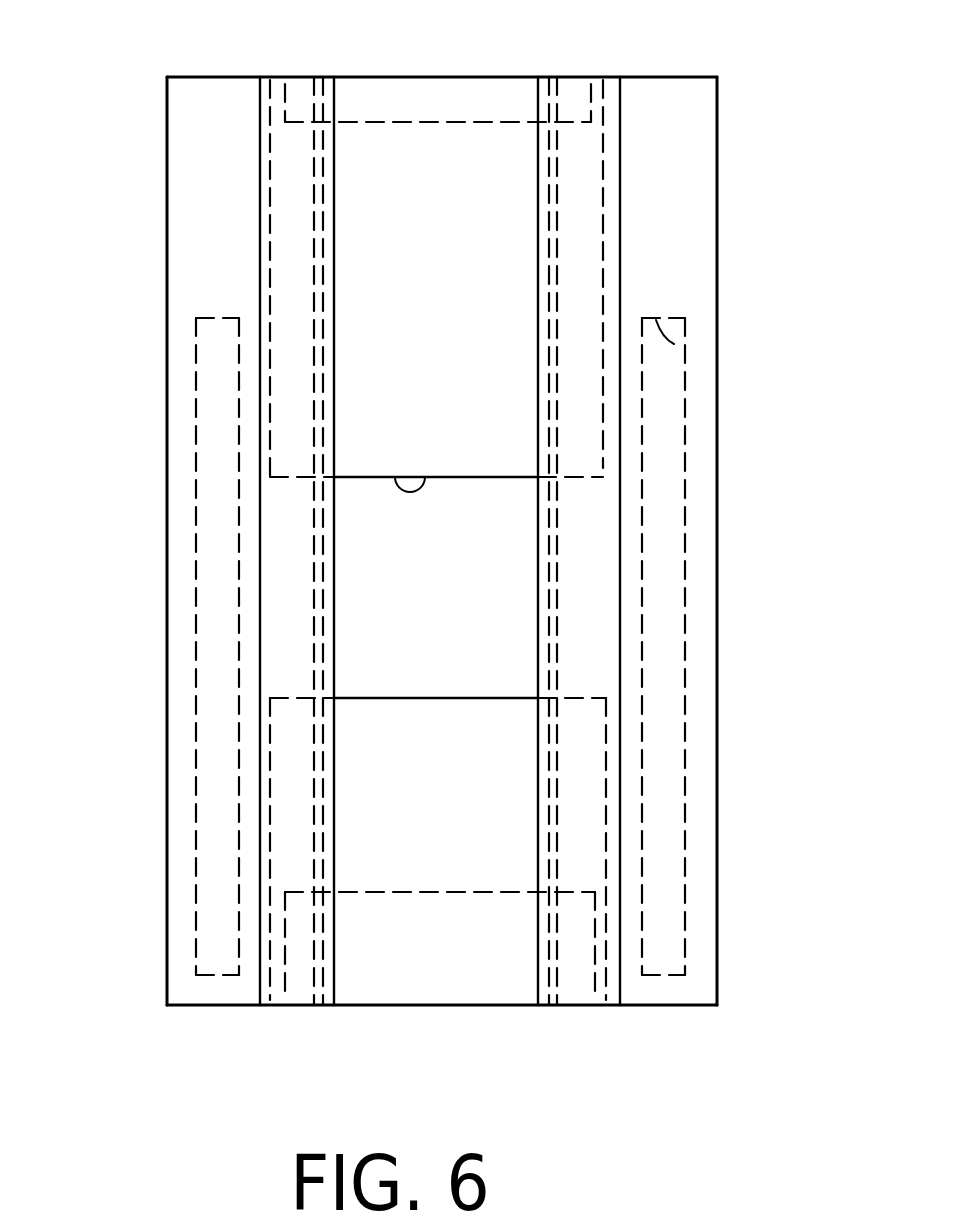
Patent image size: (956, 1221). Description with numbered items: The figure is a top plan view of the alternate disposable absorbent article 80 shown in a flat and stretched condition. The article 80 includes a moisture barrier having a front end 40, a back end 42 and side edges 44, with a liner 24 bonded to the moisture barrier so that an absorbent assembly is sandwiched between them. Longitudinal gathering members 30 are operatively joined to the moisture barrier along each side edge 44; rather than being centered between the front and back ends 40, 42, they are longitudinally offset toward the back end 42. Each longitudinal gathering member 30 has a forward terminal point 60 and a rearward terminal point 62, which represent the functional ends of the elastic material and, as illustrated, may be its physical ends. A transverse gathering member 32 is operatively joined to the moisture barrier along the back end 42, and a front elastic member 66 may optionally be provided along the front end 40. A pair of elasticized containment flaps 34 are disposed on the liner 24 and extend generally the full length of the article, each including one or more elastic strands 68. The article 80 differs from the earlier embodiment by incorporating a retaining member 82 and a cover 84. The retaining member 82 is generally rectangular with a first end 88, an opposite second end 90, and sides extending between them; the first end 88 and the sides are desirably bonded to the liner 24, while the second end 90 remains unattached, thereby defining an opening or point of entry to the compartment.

The absorbent article 80 is at (105, 112).
The first end 88 is at (362, 145).
The front elastic member 66 is at (405, 100).
The front end 40 is at (650, 77).
The side edges 44 is at (717, 115).
The containment flaps 34 is at (283, 251).
The retaining member 82 is at (455, 240).
The elastic strands 68 is at (555, 247).
The forward terminal point 60 is at (683, 350).
The second end 90 is at (400, 479).
The liner 24 is at (455, 551).
The longitudinal gathering members 30 is at (197, 563).
The cover 84 is at (455, 801).
The rearward terminal point 62 is at (209, 977).
The transverse gathering member 32 is at (452, 1000).
The back end 42 is at (650, 1007).